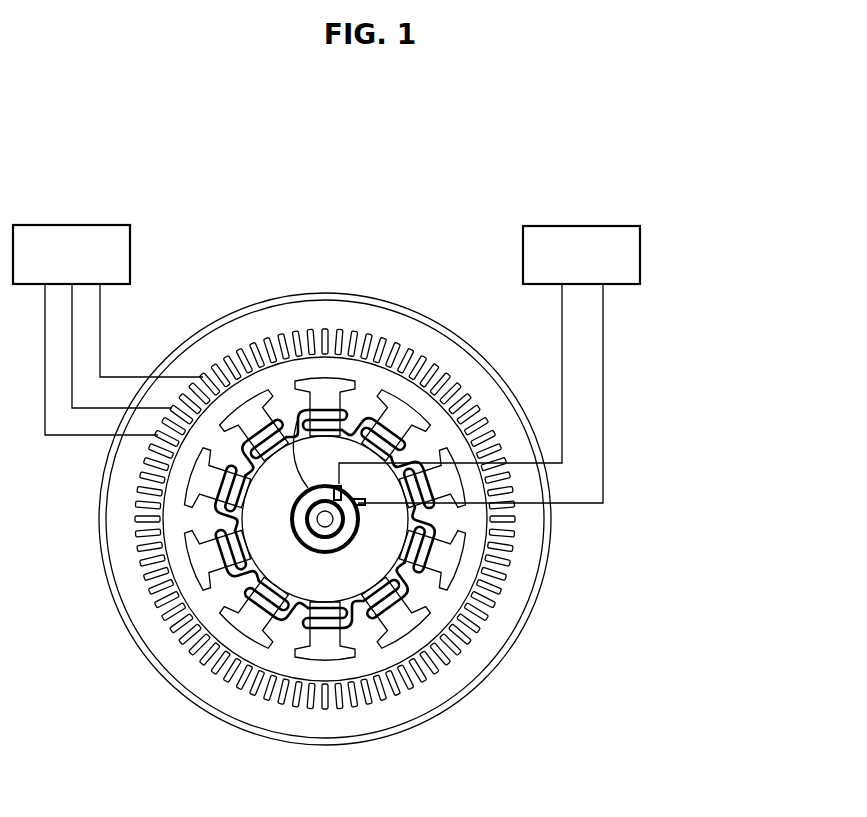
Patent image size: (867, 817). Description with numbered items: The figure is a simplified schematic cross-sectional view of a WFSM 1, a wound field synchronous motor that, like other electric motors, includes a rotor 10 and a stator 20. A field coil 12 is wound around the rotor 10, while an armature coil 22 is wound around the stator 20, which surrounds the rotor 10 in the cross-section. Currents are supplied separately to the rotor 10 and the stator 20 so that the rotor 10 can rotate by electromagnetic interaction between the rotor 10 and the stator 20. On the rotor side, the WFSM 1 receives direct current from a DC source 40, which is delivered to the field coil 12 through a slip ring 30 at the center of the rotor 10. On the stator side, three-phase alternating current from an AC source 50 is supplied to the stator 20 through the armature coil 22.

The WFSM 1 is at (732, 163).
The rotor 10 is at (295, 568).
The field coil 12 is at (286, 618).
The stator 20 is at (527, 566).
The armature coil 22 is at (512, 630).
The slip ring 30 is at (353, 547).
The DC source 40 is at (585, 226).
The AC source 50 is at (67, 225).